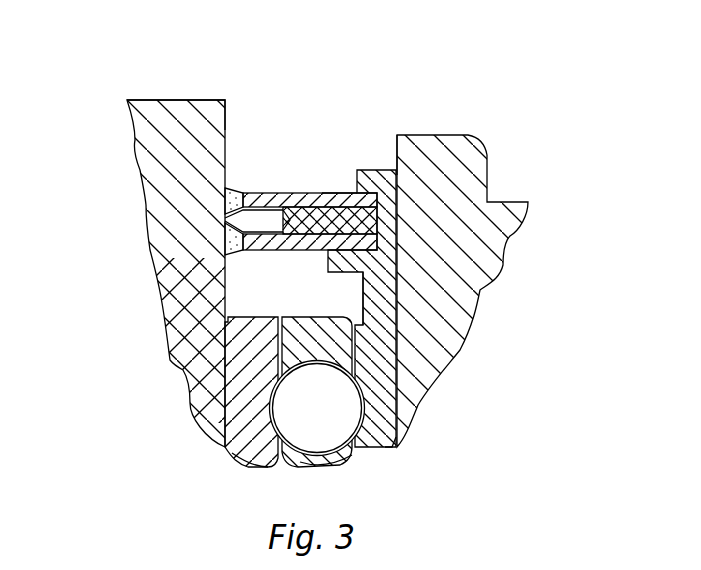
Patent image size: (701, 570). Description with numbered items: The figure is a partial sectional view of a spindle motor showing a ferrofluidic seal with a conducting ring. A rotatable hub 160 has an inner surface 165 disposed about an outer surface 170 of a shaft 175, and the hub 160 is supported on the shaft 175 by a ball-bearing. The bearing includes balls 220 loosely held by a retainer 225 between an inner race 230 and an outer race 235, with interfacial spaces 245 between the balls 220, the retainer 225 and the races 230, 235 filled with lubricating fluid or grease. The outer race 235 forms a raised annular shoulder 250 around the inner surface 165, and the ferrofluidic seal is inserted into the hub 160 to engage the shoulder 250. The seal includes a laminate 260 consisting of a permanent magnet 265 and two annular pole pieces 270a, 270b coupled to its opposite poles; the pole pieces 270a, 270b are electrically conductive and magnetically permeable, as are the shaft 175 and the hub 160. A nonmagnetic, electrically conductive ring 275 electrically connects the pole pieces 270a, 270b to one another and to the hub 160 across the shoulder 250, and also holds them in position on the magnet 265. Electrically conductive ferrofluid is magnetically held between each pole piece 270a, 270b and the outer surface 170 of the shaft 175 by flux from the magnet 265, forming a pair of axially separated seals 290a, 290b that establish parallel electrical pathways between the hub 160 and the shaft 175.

The hub 160 is at (487, 158).
The inner surface 165 is at (392, 146).
The outer surface 170 is at (230, 137).
The shaft 175 is at (227, 112).
The balls 220 is at (343, 423).
The retainer 225 is at (225, 357).
The inner race 230 is at (252, 468).
The outer race 235 is at (385, 441).
The interfacial spaces 245 is at (357, 450).
The shoulder 250 is at (374, 274).
The laminate 260 is at (337, 170).
The permanent magnet 265 is at (283, 218).
The pole piece 270a is at (322, 193).
The pole piece 270b is at (272, 250).
The electrically conductive ring 275 is at (355, 170).
The seal 290a is at (227, 192).
The seal 290b is at (233, 252).